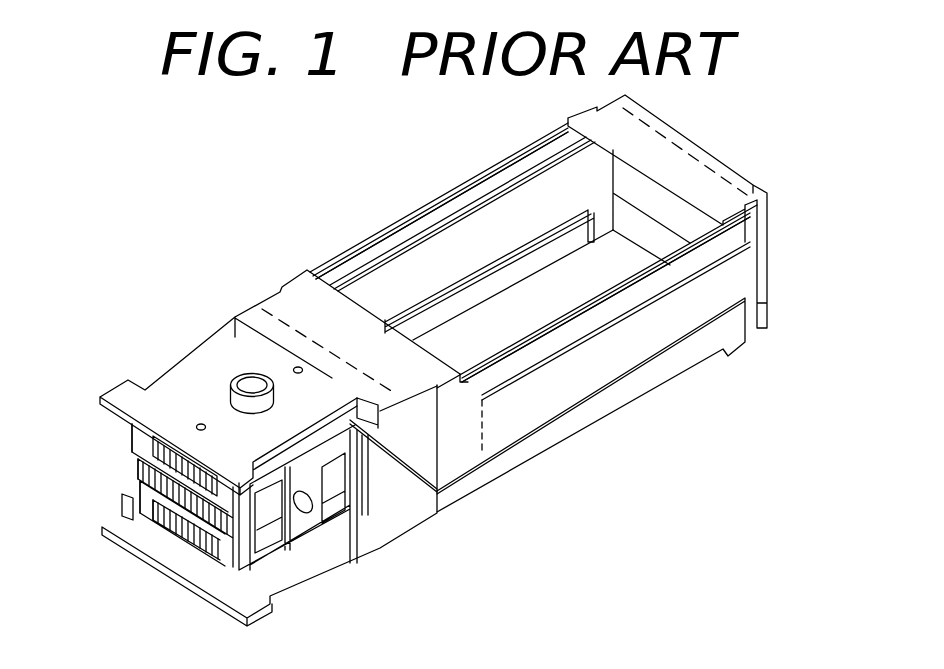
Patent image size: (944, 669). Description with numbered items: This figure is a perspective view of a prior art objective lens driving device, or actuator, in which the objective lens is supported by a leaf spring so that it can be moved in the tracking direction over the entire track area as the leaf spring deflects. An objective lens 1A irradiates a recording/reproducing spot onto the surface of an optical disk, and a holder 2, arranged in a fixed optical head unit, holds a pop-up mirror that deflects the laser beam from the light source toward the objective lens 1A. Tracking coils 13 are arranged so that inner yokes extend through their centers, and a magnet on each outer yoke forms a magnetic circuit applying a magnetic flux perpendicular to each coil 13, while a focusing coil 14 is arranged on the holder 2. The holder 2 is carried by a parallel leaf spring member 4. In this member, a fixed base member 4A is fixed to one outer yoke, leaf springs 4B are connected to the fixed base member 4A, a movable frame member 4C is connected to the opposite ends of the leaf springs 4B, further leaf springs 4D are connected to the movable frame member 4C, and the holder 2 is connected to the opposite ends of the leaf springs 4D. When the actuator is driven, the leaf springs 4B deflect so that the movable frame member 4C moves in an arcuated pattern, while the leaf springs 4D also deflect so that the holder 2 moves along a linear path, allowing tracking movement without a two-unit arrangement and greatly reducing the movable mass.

The objective lens 1A is at (236, 382).
The holder 2 is at (124, 398).
The parallel leaf spring member 4 is at (543, 343).
The fixed base member 4A is at (418, 452).
The leaf springs 4B is at (520, 220).
The movable frame member 4C is at (770, 218).
The leaf springs 4D is at (448, 207).
The tracking coils 13 is at (145, 470).
The focusing coil 14 is at (138, 438).